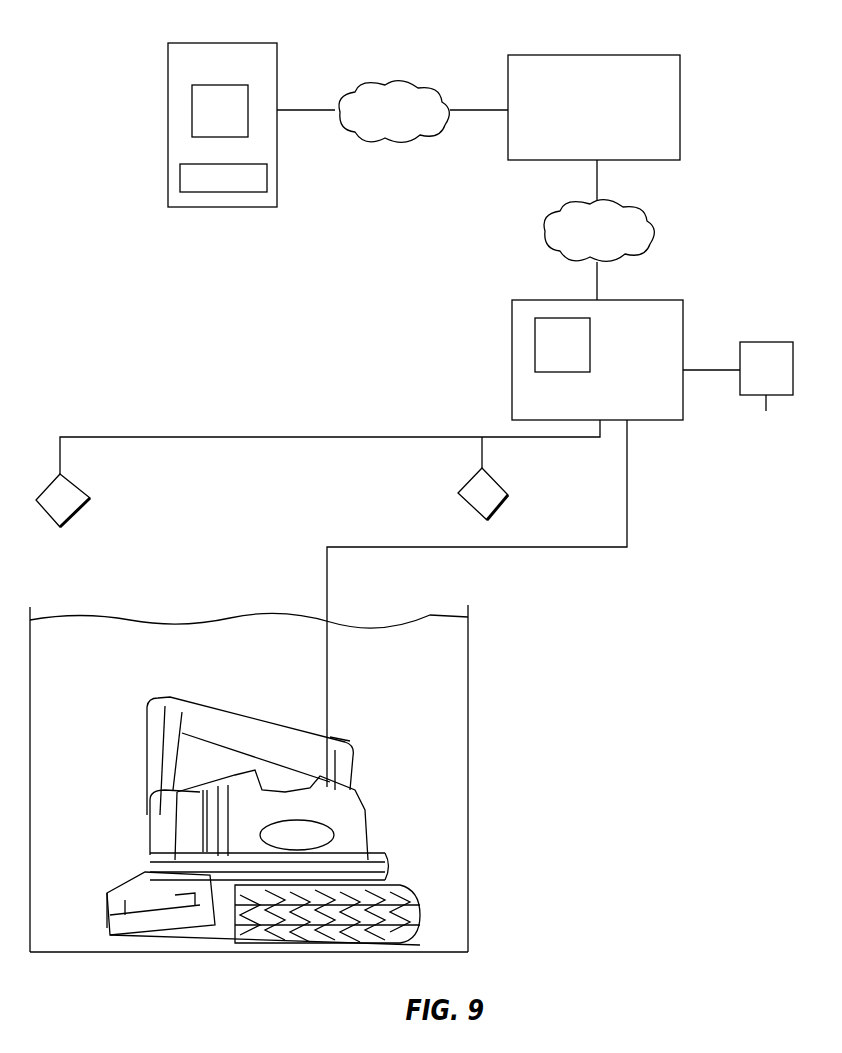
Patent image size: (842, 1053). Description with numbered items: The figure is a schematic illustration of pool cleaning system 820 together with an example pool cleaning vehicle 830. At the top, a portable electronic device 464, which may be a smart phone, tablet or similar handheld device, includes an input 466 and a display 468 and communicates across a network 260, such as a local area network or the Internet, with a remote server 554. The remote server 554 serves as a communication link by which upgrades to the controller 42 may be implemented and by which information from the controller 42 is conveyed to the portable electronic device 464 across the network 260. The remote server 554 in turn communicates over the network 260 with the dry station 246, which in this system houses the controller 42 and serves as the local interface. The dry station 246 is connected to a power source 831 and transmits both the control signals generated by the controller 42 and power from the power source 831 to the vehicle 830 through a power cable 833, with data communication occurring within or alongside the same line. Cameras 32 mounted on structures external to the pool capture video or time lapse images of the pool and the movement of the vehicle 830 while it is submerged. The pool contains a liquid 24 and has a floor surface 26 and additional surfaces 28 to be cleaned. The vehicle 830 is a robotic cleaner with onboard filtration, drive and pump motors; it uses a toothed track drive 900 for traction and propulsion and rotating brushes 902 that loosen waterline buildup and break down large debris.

The pool cleaning system 820 is at (108, 100).
The portable electronic device 464 is at (278, 58).
The display 468 is at (192, 106).
The input 466 is at (180, 176).
The network 260 is at (373, 142).
The remote server 554 is at (681, 85).
The dry station 246 is at (684, 332).
The controller 42 is at (535, 344).
The power source 831 is at (738, 389).
The cameras 32 is at (76, 484).
The power cable 833 is at (570, 548).
The surfaces 28 is at (470, 700).
The floor surface 26 is at (66, 945).
The liquid 24 is at (212, 630).
The pool cleaning vehicle 830 is at (263, 785).
The toothed track drive 900 is at (168, 935).
The rotating brushes 902 is at (302, 935).